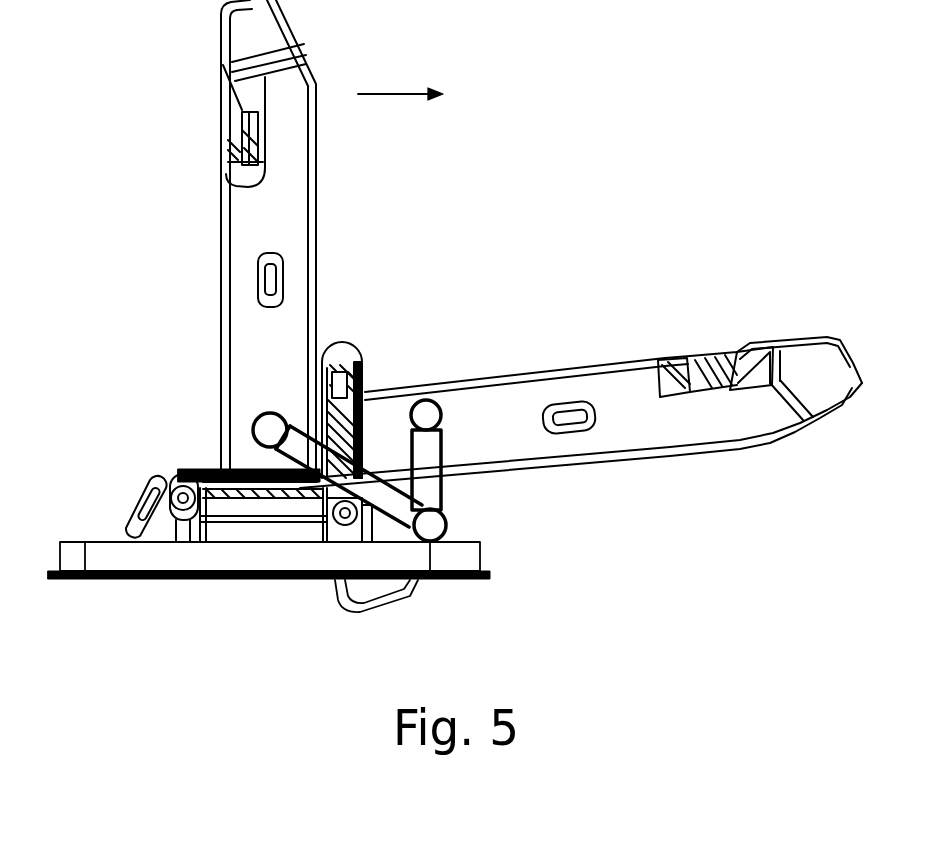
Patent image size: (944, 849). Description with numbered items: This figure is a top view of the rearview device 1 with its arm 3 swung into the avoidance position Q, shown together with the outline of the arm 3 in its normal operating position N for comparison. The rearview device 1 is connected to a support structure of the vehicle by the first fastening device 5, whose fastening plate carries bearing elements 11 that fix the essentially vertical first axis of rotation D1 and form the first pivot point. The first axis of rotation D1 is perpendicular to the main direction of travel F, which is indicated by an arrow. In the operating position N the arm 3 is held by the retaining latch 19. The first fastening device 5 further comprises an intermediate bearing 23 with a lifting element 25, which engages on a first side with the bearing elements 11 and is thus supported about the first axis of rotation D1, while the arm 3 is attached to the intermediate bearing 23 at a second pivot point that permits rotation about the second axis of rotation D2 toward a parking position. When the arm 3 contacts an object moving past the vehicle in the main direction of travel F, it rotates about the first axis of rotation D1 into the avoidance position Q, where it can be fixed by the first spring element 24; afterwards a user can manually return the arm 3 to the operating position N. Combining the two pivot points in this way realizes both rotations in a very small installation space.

The rearview device 1 is at (536, 208).
The arm 3 is at (292, 204).
The first fastening device 5 is at (220, 555).
The bearing elements 11 is at (347, 532).
The retaining latch 19 is at (148, 500).
The intermediate bearing 23 is at (207, 462).
The first spring element 24 is at (414, 505).
The lifting element 25 is at (292, 513).
The first axis of rotation D1 is at (446, 504).
The second axis of rotation D2 is at (187, 516).
The main direction of travel F is at (400, 79).
The operating position N is at (255, 325).
The avoidance position Q is at (673, 432).